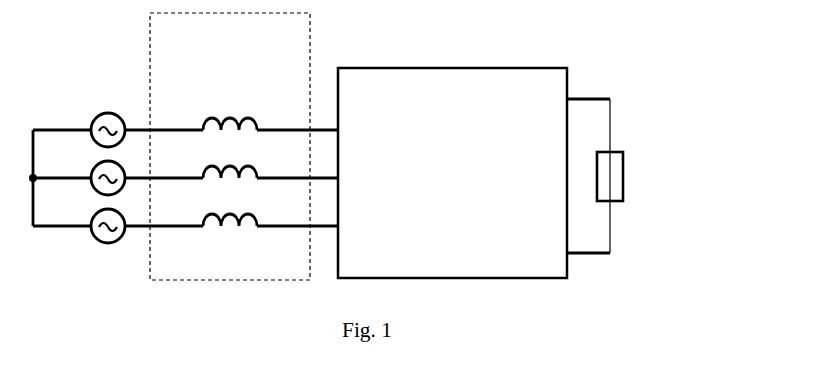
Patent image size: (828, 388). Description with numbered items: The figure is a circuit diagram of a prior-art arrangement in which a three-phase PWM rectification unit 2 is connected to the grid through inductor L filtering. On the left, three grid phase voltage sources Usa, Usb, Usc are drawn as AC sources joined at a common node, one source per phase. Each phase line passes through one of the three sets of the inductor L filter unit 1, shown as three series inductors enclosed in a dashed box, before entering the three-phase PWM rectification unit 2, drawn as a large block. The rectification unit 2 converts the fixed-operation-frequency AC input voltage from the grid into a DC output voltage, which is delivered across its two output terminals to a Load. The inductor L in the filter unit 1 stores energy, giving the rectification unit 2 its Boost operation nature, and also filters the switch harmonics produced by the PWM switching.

The inductor L filter unit 1 is at (253, 146).
The three-phase PWM rectification unit 2 is at (482, 88).
The phase A voltage source Usa is at (82, 116).
The phase B voltage source Usb is at (82, 171).
The phase C voltage source Usc is at (82, 219).
The load Load is at (629, 176).